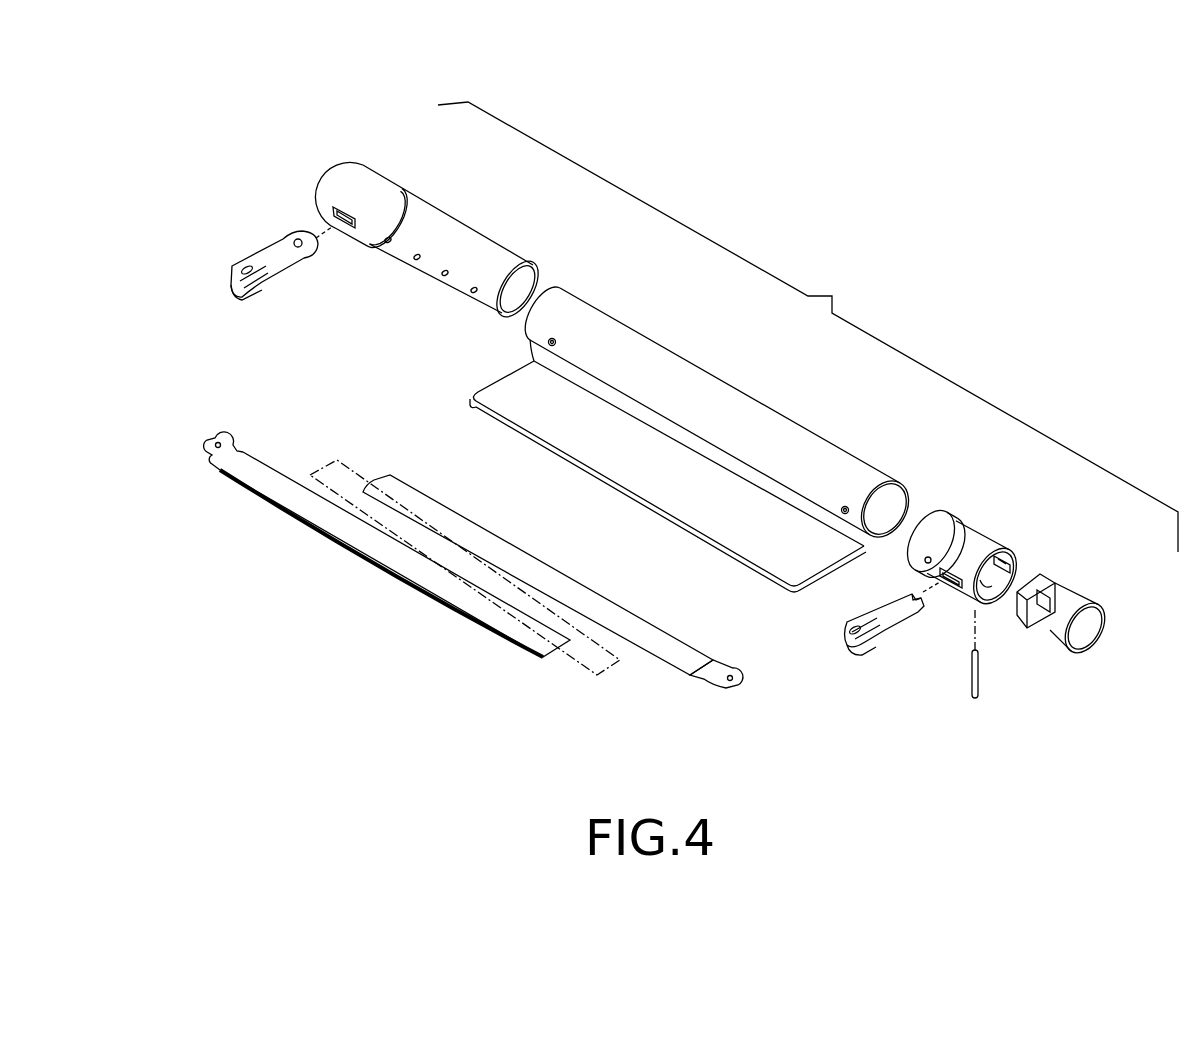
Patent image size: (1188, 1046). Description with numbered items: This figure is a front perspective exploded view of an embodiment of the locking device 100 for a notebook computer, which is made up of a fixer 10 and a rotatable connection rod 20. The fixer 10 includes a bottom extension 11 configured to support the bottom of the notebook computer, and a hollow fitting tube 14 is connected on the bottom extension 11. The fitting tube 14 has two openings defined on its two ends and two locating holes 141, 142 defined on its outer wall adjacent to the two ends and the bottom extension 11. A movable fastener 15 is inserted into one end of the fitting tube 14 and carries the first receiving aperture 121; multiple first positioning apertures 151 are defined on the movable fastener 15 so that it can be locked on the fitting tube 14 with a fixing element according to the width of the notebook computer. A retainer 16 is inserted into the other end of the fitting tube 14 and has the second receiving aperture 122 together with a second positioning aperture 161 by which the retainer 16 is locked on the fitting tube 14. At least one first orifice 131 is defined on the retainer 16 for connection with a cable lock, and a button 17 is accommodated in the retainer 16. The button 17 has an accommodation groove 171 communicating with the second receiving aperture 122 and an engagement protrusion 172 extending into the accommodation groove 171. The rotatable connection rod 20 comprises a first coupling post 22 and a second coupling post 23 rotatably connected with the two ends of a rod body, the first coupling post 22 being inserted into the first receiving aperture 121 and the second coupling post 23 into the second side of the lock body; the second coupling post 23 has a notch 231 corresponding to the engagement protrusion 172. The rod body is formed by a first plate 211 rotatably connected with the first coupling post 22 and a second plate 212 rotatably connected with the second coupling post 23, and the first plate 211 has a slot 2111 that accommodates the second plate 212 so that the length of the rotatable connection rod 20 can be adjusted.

The locking device 100 is at (201, 96).
The fixer 10 is at (808, 327).
The bottom extension 11 is at (503, 395).
The fitting tube 14 is at (708, 383).
The locating hole 141 is at (550, 342).
The locating hole 142 is at (842, 512).
The movable fastener 15 is at (418, 212).
The first positioning apertures 151 is at (440, 276).
The first receiving aperture 121 is at (346, 224).
The second receiving aperture 122 is at (953, 587).
The first orifice 131 is at (998, 570).
The retainer 16 is at (972, 540).
The second positioning apertures 161 is at (925, 561).
The button 17 is at (1077, 597).
The accommodation groove 171 is at (1080, 595).
The engagement protrusion 172 is at (1092, 622).
The rotatable connection rod 20 is at (626, 679).
The first plate 211 is at (277, 480).
The slot 2111 is at (543, 659).
The second plate 212 is at (407, 493).
The first coupling post 22 is at (262, 260).
The second coupling post 23 is at (858, 652).
The notch 231 is at (893, 599).